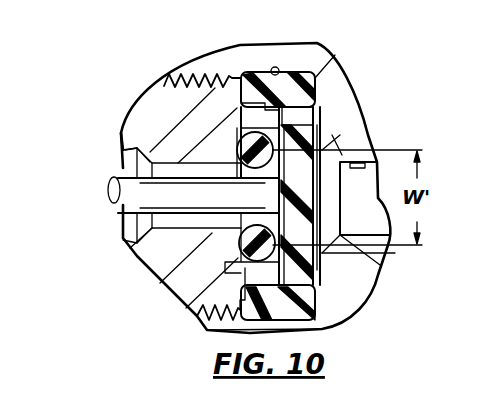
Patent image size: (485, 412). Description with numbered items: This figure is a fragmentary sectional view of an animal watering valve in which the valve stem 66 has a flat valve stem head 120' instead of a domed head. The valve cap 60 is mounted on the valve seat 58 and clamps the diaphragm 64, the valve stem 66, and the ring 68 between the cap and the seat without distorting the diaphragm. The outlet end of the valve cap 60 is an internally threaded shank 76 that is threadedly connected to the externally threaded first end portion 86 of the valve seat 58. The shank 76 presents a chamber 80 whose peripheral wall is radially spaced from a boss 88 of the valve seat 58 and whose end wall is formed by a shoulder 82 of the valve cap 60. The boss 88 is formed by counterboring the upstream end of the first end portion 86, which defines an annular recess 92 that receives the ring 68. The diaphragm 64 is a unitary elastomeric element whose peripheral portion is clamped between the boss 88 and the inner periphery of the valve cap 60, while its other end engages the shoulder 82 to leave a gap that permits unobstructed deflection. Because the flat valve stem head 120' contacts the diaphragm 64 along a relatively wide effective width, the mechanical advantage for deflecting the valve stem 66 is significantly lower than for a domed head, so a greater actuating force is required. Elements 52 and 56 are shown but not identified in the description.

The retainer block 52 is at (370, 152).
The lip 56 is at (125, 154).
The valve seat 58 is at (128, 137).
The valve cap 60 is at (322, 58).
The diaphragm 64 is at (327, 269).
The valve stem 66 is at (127, 207).
The ring 68 is at (242, 134).
The internally threaded shank 76 is at (196, 82).
The chamber 80 is at (279, 70).
The shoulder 82 is at (322, 115).
The externally threaded first end portion 86 is at (181, 84).
The boss 88 is at (262, 72).
The annular recess 92 is at (236, 136).
The flat valve stem head 120' is at (371, 185).